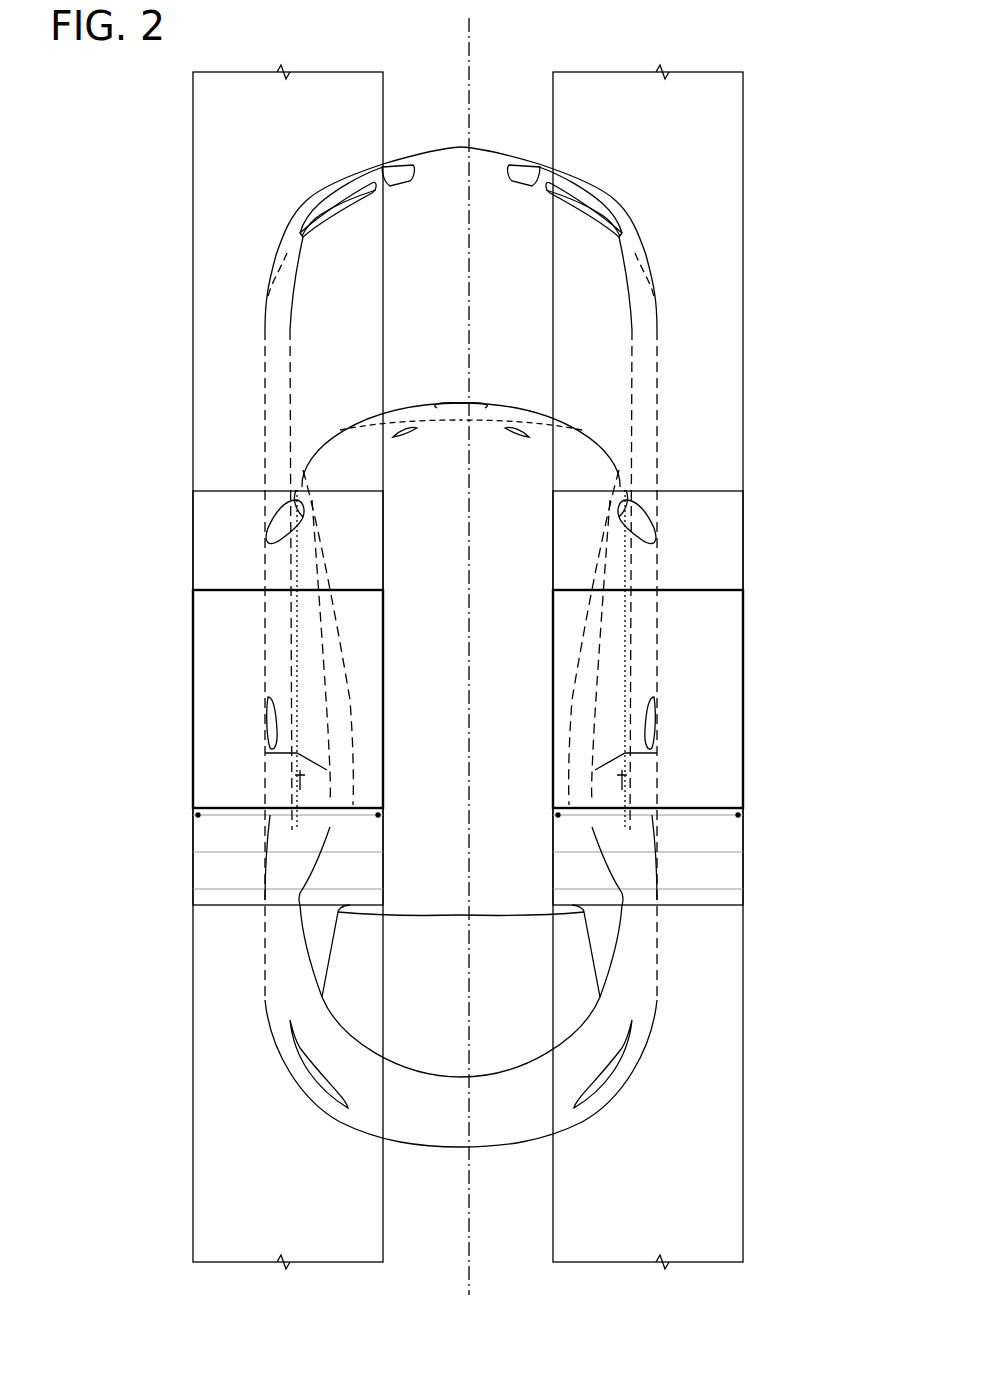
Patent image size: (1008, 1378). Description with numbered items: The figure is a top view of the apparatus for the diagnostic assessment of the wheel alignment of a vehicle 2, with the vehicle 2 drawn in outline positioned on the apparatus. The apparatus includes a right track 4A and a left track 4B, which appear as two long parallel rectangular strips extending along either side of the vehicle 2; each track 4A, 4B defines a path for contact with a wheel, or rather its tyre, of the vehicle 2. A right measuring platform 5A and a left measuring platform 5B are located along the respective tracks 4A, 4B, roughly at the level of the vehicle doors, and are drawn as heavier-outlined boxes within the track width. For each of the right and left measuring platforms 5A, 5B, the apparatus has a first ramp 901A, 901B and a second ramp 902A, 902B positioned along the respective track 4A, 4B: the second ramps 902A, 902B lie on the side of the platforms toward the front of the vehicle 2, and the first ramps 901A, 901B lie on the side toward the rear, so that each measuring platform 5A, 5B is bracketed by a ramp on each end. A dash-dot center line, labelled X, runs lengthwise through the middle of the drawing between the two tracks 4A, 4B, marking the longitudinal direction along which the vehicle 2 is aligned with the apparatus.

The vehicle 2 is at (488, 200).
The right track 4A is at (690, 172).
The left track 4B is at (243, 160).
The right measuring platform 5A is at (748, 698).
The left measuring platform 5B is at (193, 685).
The first ramp 901A is at (705, 838).
The first ramp 901B is at (220, 838).
The second ramp 902A is at (728, 528).
The second ramp 902B is at (210, 534).
The longitudinal axis X is at (470, 1215).